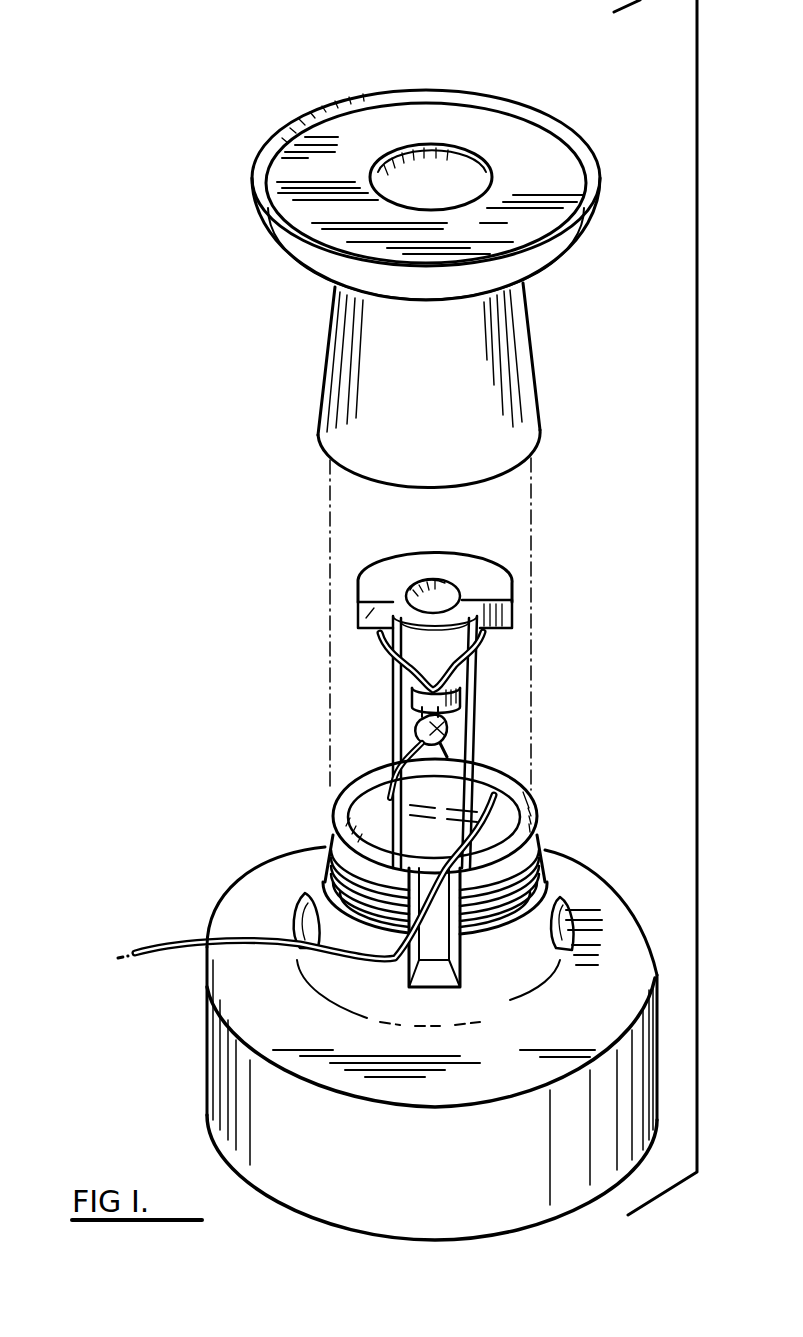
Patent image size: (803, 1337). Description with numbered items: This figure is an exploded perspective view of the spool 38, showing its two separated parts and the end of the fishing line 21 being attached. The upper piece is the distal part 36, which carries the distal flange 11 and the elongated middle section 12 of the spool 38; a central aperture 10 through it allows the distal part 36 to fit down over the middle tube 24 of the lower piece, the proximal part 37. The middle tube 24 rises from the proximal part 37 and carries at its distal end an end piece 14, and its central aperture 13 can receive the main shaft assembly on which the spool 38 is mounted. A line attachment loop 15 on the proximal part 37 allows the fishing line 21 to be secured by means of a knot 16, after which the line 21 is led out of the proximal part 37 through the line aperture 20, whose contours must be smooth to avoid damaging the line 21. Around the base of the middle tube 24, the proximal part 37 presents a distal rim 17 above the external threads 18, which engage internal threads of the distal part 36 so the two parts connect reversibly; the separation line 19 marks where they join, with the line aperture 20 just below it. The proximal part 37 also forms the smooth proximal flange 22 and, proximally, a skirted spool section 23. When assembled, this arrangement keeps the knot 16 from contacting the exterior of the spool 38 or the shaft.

The central aperture 10 is at (400, 180).
The distal flange 11 is at (327, 263).
The middle section 12 is at (377, 367).
The distal part 36 is at (367, 447).
The central aperture 13 is at (405, 568).
The end piece 14 is at (373, 618).
The line attachment loop 15 is at (415, 687).
The knot 16 is at (418, 735).
The middle tube 24 is at (390, 755).
The distal rim 17 is at (347, 800).
The external threads 18 is at (330, 840).
The separation line 19 is at (320, 900).
The line aperture 20 is at (434, 970).
The fishing line 21 is at (160, 950).
The proximal flange 22 is at (267, 1022).
The skirted spool section 23 is at (243, 1067).
The proximal part 37 is at (383, 1192).
The spool 38 is at (700, 580).